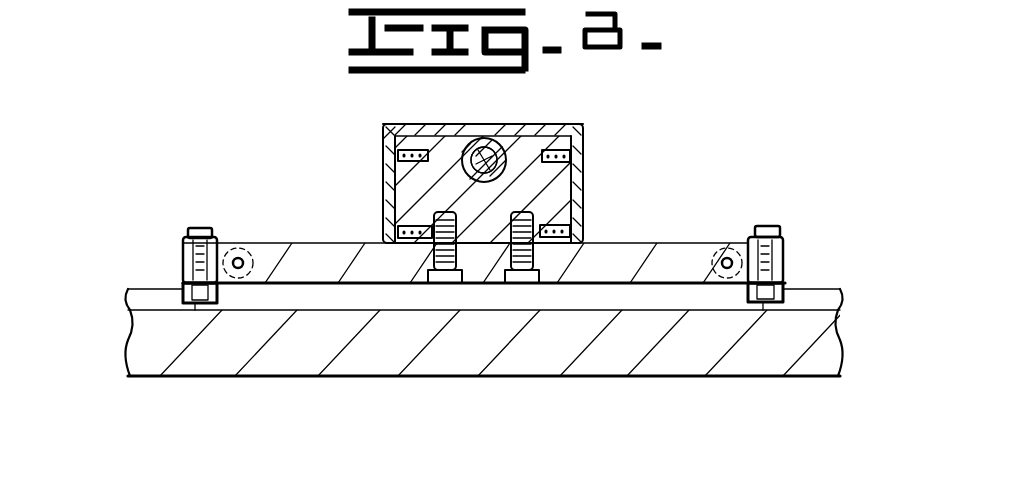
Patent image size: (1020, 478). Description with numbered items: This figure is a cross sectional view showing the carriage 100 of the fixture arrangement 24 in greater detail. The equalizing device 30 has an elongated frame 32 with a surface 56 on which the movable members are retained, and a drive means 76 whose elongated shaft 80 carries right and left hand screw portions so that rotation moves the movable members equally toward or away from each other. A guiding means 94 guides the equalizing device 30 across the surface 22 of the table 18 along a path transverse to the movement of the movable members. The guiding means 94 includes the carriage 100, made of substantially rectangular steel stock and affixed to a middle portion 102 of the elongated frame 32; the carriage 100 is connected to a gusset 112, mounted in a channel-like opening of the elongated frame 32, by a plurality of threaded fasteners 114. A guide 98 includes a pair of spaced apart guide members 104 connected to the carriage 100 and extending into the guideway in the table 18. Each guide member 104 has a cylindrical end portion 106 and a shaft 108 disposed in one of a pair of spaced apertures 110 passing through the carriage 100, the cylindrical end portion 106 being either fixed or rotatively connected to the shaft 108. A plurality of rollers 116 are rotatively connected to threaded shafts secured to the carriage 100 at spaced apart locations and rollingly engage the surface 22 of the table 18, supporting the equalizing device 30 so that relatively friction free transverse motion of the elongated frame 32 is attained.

The table 18 is at (845, 338).
The surface 22 is at (838, 289).
The fixture arrangement 24 is at (176, 48).
The equalizing device 30 is at (802, 92).
The elongated frame 32 is at (383, 186).
The surface 56 is at (503, 124).
The drive means 76 is at (443, 178).
The elongated shaft 80 is at (528, 142).
The guiding means 94 is at (830, 178).
The guide 98 is at (160, 316).
The carriage 100 is at (697, 195).
The middle portion 102 is at (584, 188).
The guide members 104 is at (195, 308).
The cylindrical end portion 106 is at (185, 294).
The shaft 108 is at (188, 262).
The apertures 110 is at (188, 232).
The gusset 112 is at (584, 156).
The threaded fasteners 114 is at (520, 285).
The rollers 116 is at (237, 248).